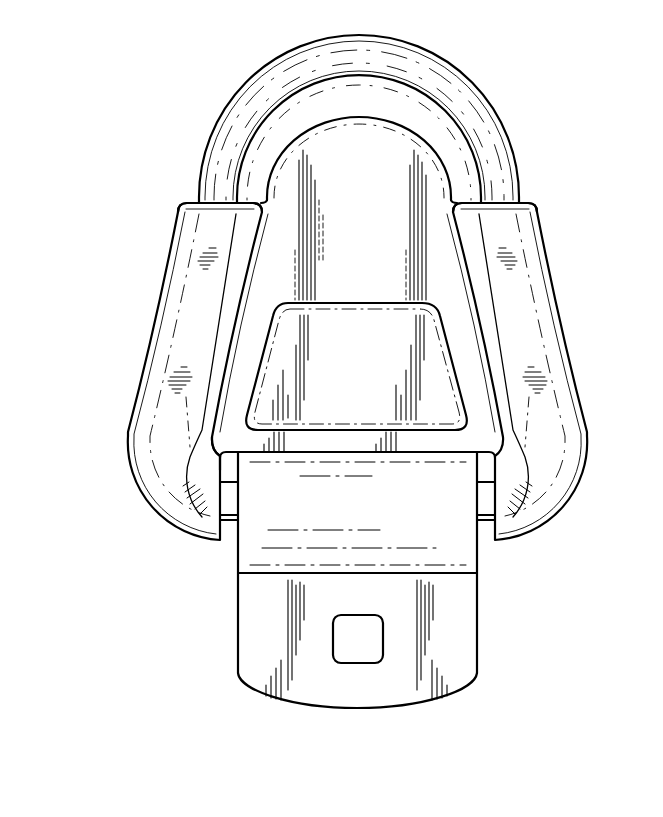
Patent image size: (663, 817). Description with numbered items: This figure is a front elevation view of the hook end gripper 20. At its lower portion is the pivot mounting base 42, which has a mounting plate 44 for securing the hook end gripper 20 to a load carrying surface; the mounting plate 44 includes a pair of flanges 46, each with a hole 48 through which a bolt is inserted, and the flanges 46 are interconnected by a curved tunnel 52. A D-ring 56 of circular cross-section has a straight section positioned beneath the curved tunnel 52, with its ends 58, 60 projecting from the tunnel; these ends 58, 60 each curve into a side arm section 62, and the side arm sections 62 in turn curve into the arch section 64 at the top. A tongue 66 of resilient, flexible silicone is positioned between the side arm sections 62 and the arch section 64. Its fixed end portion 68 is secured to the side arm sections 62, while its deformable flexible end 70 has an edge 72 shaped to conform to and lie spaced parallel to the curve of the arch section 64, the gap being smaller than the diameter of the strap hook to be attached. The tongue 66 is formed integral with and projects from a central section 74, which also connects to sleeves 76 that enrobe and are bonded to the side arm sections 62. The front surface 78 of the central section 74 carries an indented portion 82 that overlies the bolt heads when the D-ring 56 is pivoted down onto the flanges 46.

The hook end gripper 20 is at (100, 123).
The D-ring 56 is at (230, 82).
The arch section 64 is at (423, 63).
The edge 72 is at (335, 115).
The deformable flexible end 70 is at (338, 145).
The tongue 66 is at (372, 210).
The fixed end portion 68 is at (330, 235).
The central section 74 is at (330, 287).
The sleeves 76 is at (165, 364).
The side arm sections 62 is at (197, 190).
The front surface 78 is at (233, 392).
The indented portion 82 is at (370, 384).
The pivot mounting base 42 is at (213, 597).
The mounting plate 44 is at (230, 709).
The curved tunnel 52 is at (372, 511).
The flanges 46 is at (462, 640).
The hole 48 is at (382, 643).
The end 58 is at (230, 520).
The end 60 is at (487, 507).